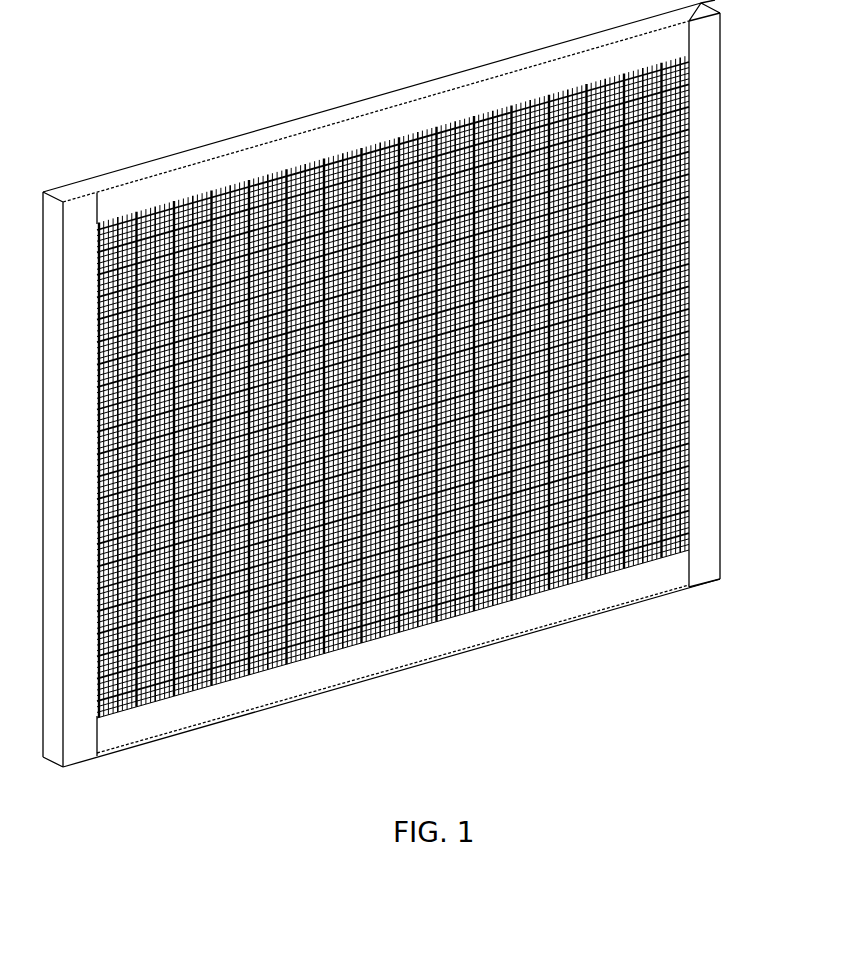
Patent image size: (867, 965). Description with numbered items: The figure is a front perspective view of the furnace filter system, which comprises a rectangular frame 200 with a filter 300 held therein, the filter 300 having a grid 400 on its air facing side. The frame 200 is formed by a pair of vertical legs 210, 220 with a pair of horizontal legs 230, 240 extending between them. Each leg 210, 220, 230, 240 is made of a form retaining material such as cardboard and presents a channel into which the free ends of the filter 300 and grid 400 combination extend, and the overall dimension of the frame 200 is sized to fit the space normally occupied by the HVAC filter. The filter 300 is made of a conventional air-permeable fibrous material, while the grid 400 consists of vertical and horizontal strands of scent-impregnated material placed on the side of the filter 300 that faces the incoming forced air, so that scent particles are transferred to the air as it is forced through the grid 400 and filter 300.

The frame 200 is at (406, 403).
The vertical leg 210 is at (49, 222).
The vertical leg 220 is at (710, 257).
The horizontal leg 230 is at (350, 130).
The horizontal leg 240 is at (288, 693).
The filter 300 is at (697, 86).
The grid 400 is at (693, 533).